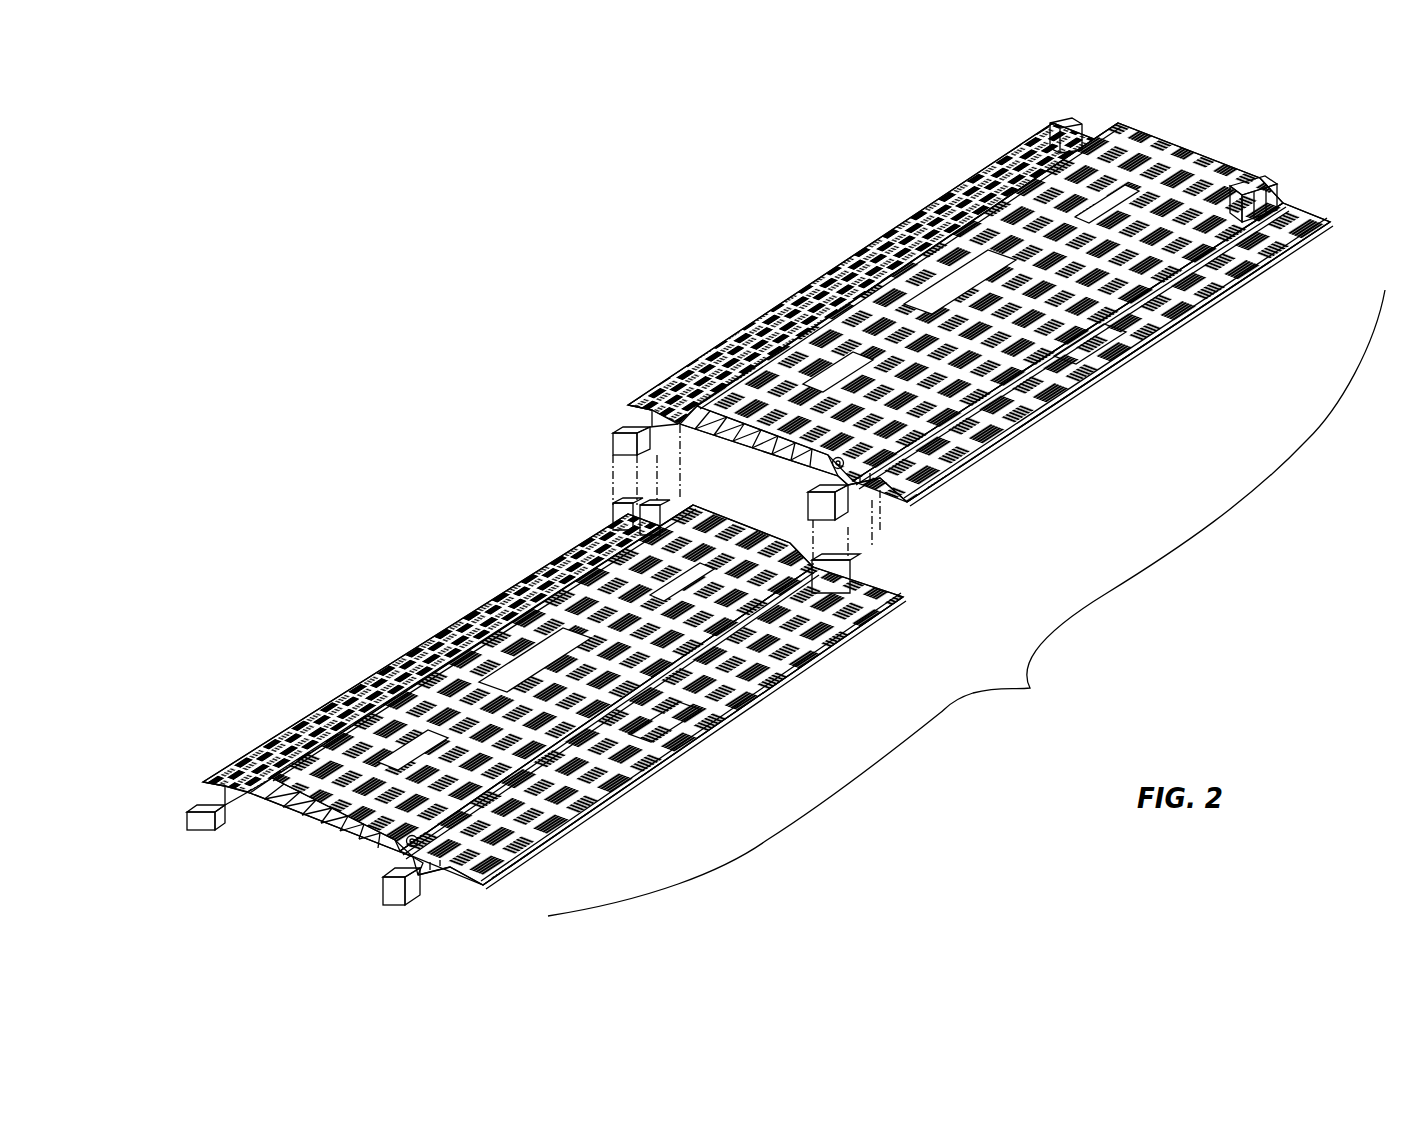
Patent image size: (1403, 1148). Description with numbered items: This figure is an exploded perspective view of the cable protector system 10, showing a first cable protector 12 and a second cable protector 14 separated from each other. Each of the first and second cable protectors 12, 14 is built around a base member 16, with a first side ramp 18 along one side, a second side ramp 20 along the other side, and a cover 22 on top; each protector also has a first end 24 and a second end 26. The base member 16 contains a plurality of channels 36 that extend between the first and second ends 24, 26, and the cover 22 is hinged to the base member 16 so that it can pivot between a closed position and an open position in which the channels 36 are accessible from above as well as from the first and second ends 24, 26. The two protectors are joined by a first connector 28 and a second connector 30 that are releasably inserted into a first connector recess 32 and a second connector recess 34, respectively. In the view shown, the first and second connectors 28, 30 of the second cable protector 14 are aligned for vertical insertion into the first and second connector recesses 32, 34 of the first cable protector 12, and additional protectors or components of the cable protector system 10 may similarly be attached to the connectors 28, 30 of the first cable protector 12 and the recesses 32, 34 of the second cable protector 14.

The cable protector system 10 is at (966, 603).
The first cable protector 12 is at (522, 563).
The second cable protector 14 is at (880, 232).
The base member 16 is at (790, 468).
The first side ramp 18 is at (765, 303).
The second side ramp 20 is at (1118, 343).
The cover 22 is at (1207, 160).
The first end 24 is at (907, 503).
The second end 26 is at (1320, 232).
The first connector 28 is at (607, 440).
The second connector 30 is at (862, 512).
The first connector recess 32 is at (1085, 126).
The second connector recess 34 is at (1285, 198).
The channels 36 is at (770, 450).